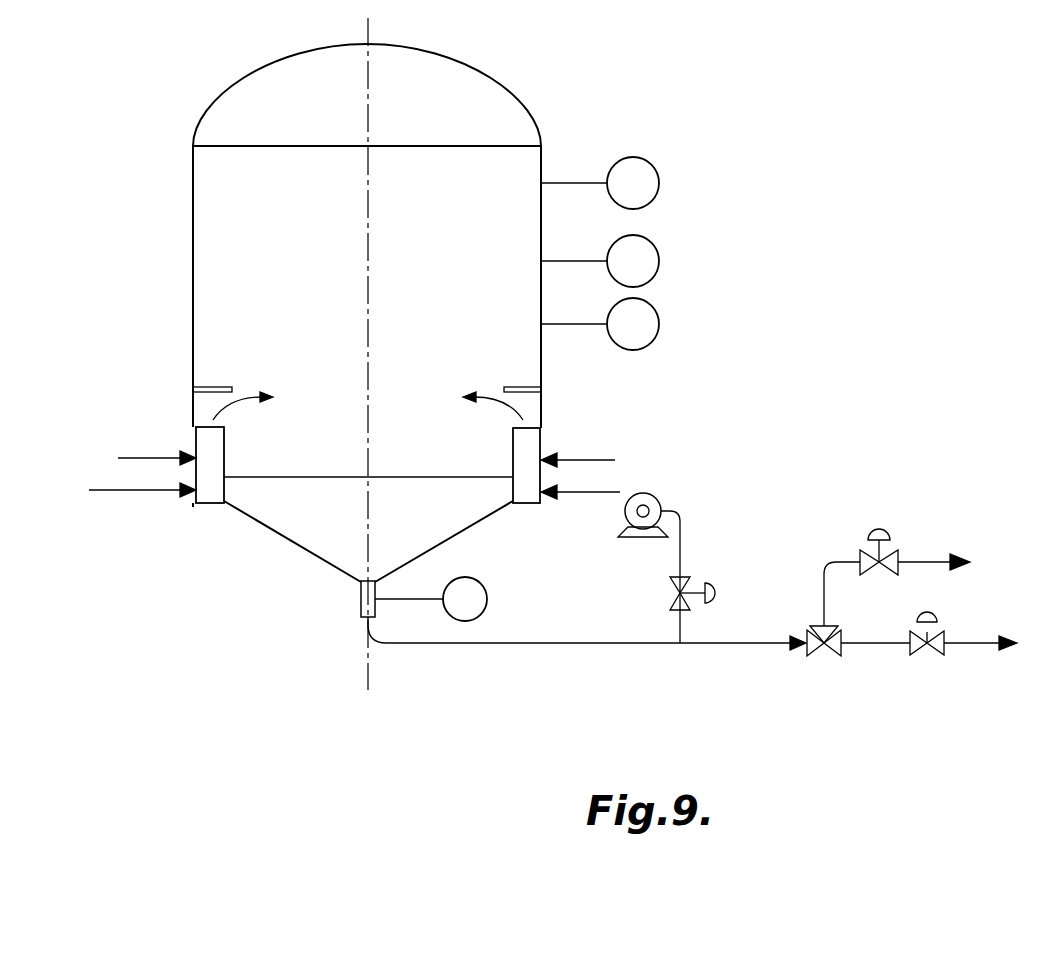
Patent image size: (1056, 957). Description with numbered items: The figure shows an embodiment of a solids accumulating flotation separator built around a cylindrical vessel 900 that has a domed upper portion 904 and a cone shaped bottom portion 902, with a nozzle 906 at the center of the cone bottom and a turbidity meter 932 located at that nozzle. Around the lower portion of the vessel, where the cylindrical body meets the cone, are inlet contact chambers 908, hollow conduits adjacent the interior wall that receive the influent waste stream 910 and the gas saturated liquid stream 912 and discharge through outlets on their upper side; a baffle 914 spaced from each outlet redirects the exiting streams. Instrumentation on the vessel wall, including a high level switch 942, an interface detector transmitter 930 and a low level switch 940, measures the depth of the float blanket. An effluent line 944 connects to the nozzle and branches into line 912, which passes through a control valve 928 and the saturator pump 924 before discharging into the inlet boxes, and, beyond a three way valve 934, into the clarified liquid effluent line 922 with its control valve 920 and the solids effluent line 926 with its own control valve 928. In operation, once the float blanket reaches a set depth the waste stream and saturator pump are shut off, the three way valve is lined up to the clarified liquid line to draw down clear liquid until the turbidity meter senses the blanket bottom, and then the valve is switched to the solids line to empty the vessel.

The vessel 900 is at (604, 111).
The cone shaped bottom portion 902 is at (273, 528).
The domed upper portion 904 is at (485, 70).
The nozzle 906 is at (360, 598).
The inlet contact chamber 908 is at (225, 445).
The waste stream 910 is at (148, 458).
The gas saturated liquid line 912 is at (160, 493).
The baffle 914 is at (212, 387).
The clarified liquid effluent control valve 920 is at (873, 528).
The clarified liquid effluent line 922 is at (927, 560).
The saturator pump 924 is at (657, 494).
The solids effluent line 926 is at (972, 648).
The control valve 928 is at (688, 576).
The interface detector transmitter 930 is at (658, 250).
The turbidity meter 932 is at (487, 596).
The three way valve 934 is at (813, 654).
The low level switch 940 is at (658, 314).
The high level switch 942 is at (657, 168).
The effluent line 944 is at (525, 648).